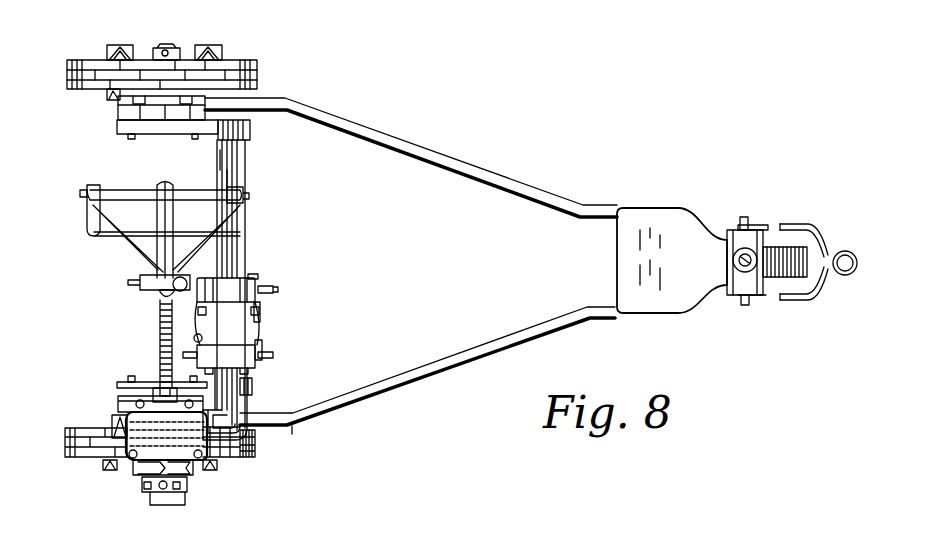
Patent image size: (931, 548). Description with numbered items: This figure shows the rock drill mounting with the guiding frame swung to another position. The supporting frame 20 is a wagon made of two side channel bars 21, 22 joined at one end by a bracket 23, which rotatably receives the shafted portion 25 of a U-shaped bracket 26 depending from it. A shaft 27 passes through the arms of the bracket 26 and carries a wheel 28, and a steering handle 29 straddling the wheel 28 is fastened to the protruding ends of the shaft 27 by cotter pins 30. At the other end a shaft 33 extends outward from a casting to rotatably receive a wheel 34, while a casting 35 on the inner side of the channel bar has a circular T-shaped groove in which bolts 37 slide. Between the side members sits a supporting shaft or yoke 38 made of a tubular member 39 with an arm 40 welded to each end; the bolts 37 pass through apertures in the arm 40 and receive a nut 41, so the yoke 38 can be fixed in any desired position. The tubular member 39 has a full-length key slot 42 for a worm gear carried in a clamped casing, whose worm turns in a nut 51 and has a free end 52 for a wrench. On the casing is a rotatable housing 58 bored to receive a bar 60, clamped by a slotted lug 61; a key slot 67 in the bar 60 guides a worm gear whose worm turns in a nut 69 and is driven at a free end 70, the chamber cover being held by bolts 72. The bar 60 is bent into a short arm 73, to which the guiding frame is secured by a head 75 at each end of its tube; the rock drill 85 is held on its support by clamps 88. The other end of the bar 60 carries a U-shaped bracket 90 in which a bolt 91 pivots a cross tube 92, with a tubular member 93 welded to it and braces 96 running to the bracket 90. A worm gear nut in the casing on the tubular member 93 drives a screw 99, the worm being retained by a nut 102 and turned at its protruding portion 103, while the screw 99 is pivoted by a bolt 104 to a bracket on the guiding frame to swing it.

The supporting frame 20 is at (290, 428).
The side channel bar 21 is at (456, 358).
The side channel bar 22 is at (480, 178).
The bracket 23 is at (672, 260).
The shafted portion 25 is at (736, 262).
The U-shaped bracket 26 is at (732, 238).
The shaft 27 is at (744, 216).
The wheel 28 is at (785, 279).
The steering handle 29 is at (816, 244).
The cotter pin 30 is at (752, 226).
The shaft 33 is at (165, 46).
The wheel 34 is at (222, 60).
The casting 35 is at (118, 112).
The bolt 37 is at (193, 136).
The supporting shaft or yoke 38 is at (218, 160).
The tubular member 39 is at (246, 176).
The arm 40 is at (251, 131).
The nut 41 is at (128, 136).
The key slot 42 is at (224, 176).
The nut 51 is at (263, 348).
The free end 52 is at (274, 355).
The housing 58 is at (261, 310).
The bar 60 is at (253, 387).
The slotted lug 61 is at (194, 338).
The key slot 67 is at (232, 262).
The nut 69 is at (259, 286).
The free end 70 is at (162, 310).
The bolt 72 is at (262, 278).
The arm 73 is at (120, 438).
The head 75 is at (136, 450).
The rock drill 85 is at (163, 504).
The clamp 88 is at (142, 478).
The U-shaped bracket 90 is at (90, 230).
The bolt 91 is at (80, 194).
The cross tube 92 is at (123, 190).
The tubular member 93 is at (157, 246).
The brace 96 is at (123, 238).
The screw 99 is at (160, 352).
The nut 102 is at (183, 277).
The portion 103 is at (140, 284).
The bolt 104 is at (155, 392).